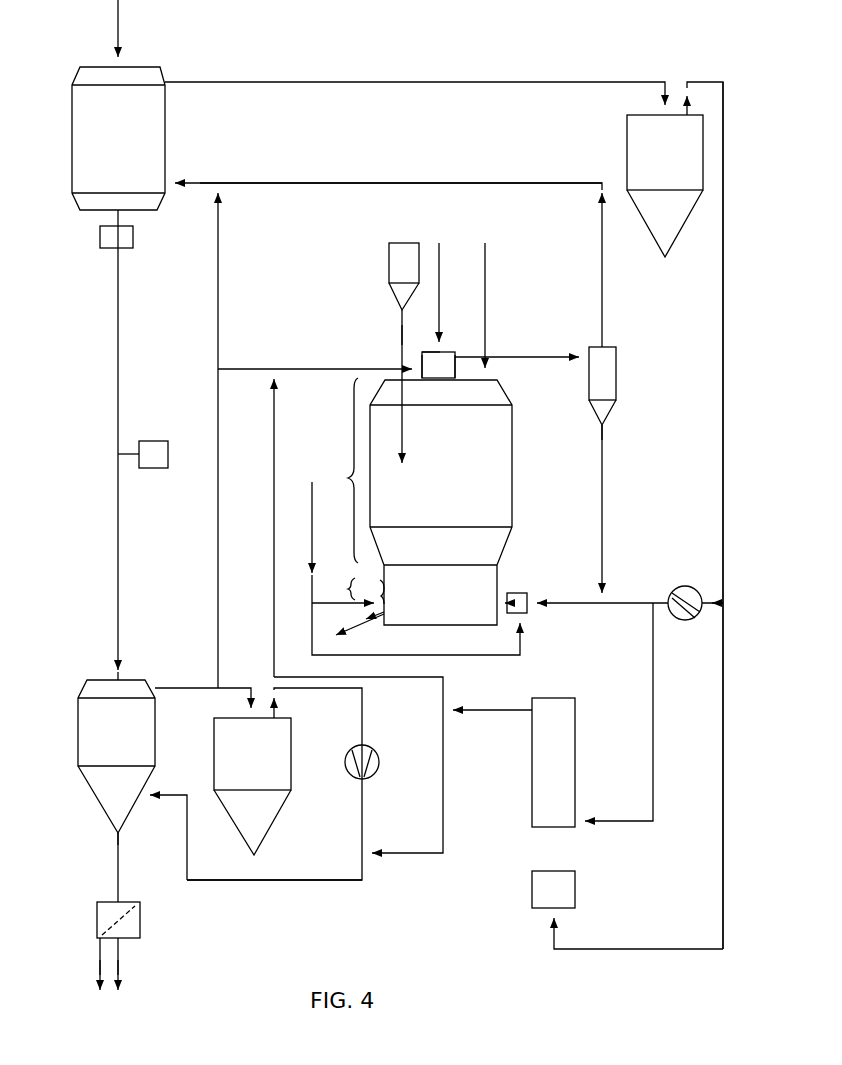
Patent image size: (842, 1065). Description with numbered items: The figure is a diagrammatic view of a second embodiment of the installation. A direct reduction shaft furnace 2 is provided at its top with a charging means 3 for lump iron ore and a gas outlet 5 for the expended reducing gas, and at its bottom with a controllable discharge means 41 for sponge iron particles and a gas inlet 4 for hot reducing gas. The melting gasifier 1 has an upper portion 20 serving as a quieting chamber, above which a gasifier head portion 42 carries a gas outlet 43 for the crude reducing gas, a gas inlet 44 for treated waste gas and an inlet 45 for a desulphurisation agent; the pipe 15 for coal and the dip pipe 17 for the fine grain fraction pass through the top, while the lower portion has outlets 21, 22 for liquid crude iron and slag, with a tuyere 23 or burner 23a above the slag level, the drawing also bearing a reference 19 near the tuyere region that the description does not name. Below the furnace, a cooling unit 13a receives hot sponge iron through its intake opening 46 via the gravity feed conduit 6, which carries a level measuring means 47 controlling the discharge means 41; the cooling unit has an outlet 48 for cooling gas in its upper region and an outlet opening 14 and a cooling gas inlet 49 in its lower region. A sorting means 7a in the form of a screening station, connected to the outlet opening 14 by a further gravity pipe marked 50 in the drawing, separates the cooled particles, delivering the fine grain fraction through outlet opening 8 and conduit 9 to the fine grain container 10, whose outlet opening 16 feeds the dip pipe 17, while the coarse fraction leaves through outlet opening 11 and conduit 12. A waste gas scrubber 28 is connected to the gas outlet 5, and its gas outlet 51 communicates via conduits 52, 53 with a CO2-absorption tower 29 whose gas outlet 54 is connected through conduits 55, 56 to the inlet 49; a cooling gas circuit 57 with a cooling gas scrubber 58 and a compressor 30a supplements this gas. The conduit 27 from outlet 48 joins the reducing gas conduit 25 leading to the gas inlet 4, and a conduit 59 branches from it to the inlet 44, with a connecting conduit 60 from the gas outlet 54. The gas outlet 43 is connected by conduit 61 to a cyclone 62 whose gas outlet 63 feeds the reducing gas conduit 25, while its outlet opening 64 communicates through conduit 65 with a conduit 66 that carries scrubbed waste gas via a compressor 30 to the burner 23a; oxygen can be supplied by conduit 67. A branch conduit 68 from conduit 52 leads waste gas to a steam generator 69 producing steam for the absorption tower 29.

The melting gasifier 1 is at (513, 478).
The direct reduction shaft furnace 2 is at (166, 125).
The charging means 3 is at (120, 22).
The gas inlet 4 is at (170, 176).
The gas outlet 5 is at (166, 80).
The gravity feed conduit 6 is at (119, 340).
The sorting means 7a is at (141, 915).
The outlet opening 8 is at (120, 942).
The conduit 9 is at (120, 980).
The fine grain container 10 is at (388, 268).
The outlet opening 11 is at (98, 942).
The conduit 12 is at (98, 980).
The cooling unit 13a is at (156, 730).
The outlet opening 14 is at (112, 836).
The pipe 15 is at (487, 270).
The outlet opening 16 is at (400, 312).
The dip pipe 17 is at (400, 335).
The inlet 19 is at (343, 588).
The upper portion 20 is at (343, 470).
The outlet 21 is at (360, 623).
The outlet 22 is at (372, 620).
The tuyere 23 is at (390, 589).
The burner 23a is at (522, 592).
The reducing gas conduit 25 is at (355, 183).
The conduit 27 is at (220, 282).
The waste gas scrubber 28 is at (626, 140).
The CO2-absorption tower 29 is at (576, 745).
The compressor 30 is at (686, 621).
The compressor 30a is at (379, 758).
The discharge means 41 is at (134, 238).
The gasifier head portion 42 is at (448, 350).
The gas outlet 43 is at (455, 355).
The gas inlet 44 is at (422, 365).
The inlet 45 is at (430, 352).
The intake opening 46 is at (112, 678).
The level measuring means 47 is at (169, 450).
The outlet 48 is at (157, 686).
The inlet 49 is at (145, 800).
The solids line 50 is at (119, 866).
The gas outlet 51 is at (688, 112).
The conduit 52 is at (720, 545).
The conduit 53 is at (654, 728).
The gas outlet 54 is at (530, 712).
The conduit 55 is at (444, 795).
The conduit 56 is at (300, 880).
The cooling gas circuit 57 is at (330, 690).
The cooling gas scrubber 58 is at (292, 755).
The conduit 59 is at (300, 368).
The connecting conduit 60 is at (275, 445).
The conduit 61 is at (525, 350).
The cyclone 62 is at (617, 372).
The gas outlet 63 is at (603, 345).
The outlet opening 64 is at (604, 427).
The conduit 65 is at (603, 490).
The conduit 66 is at (570, 606).
The conduit 67 is at (313, 535).
The branch conduit 68 is at (645, 948).
The steam generator 69 is at (576, 885).